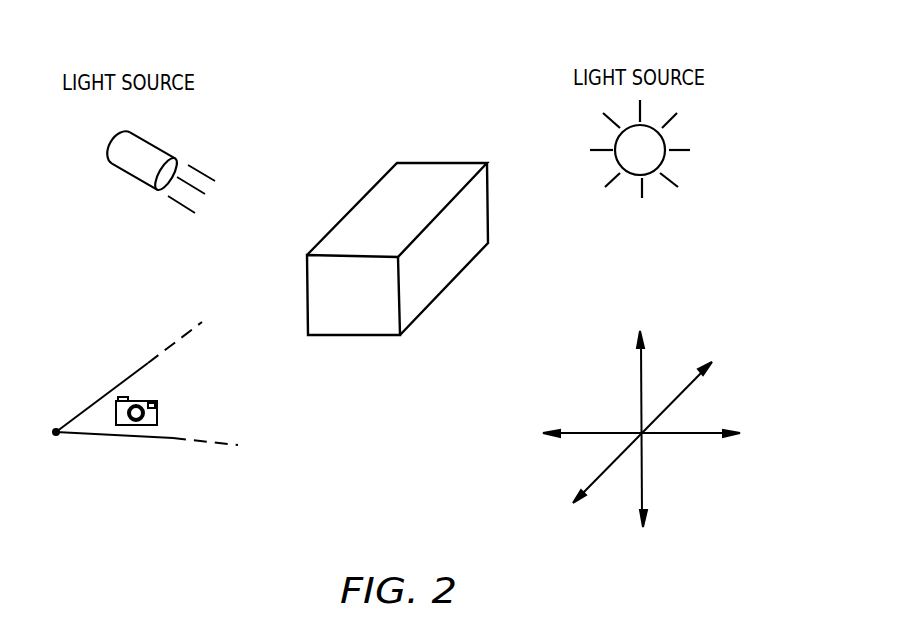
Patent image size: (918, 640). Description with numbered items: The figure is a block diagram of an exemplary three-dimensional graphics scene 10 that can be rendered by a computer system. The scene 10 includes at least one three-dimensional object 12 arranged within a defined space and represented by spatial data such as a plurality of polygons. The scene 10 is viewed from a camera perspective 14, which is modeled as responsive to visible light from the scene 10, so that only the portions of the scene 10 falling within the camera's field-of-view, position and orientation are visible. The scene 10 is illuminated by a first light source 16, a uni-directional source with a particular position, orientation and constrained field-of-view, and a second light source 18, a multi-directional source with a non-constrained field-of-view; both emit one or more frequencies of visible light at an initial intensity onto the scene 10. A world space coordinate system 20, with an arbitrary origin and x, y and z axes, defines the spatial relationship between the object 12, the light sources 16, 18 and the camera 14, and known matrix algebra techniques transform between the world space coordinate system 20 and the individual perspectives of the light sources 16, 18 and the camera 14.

The 3D graphics scene 10 is at (489, 46).
The 3D object 12 is at (448, 288).
The camera perspective 14 is at (105, 435).
The first light source 16 is at (128, 175).
The second light source 18 is at (652, 174).
The world space coordinate system 20 is at (703, 433).